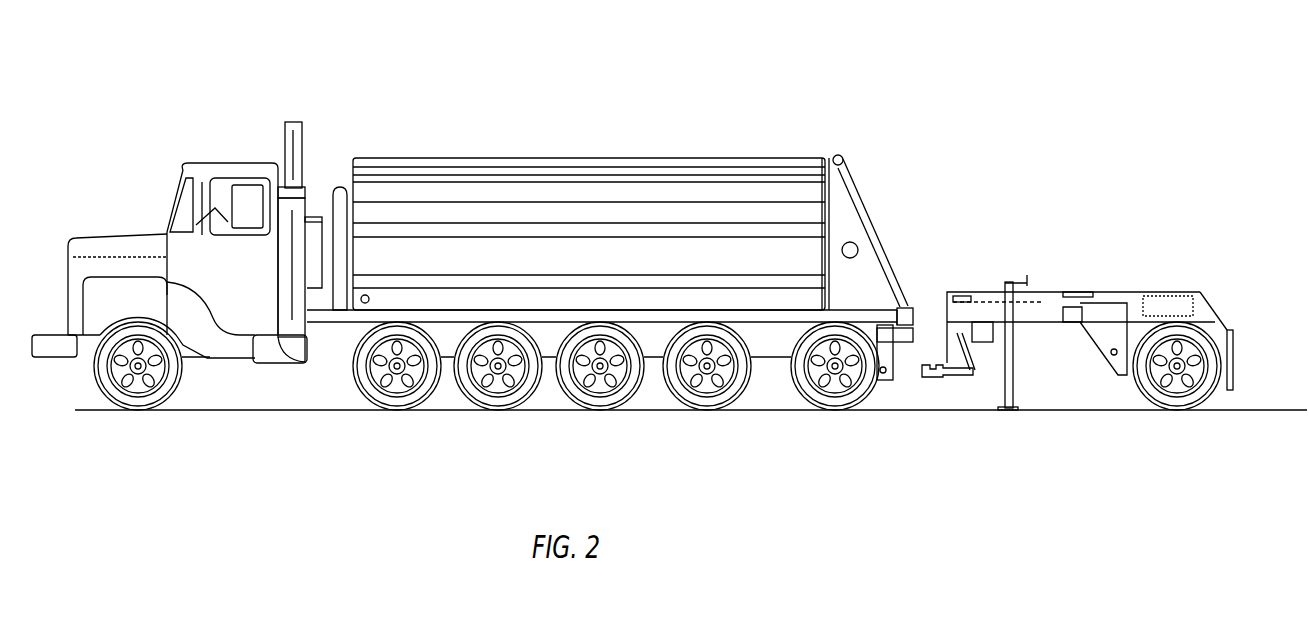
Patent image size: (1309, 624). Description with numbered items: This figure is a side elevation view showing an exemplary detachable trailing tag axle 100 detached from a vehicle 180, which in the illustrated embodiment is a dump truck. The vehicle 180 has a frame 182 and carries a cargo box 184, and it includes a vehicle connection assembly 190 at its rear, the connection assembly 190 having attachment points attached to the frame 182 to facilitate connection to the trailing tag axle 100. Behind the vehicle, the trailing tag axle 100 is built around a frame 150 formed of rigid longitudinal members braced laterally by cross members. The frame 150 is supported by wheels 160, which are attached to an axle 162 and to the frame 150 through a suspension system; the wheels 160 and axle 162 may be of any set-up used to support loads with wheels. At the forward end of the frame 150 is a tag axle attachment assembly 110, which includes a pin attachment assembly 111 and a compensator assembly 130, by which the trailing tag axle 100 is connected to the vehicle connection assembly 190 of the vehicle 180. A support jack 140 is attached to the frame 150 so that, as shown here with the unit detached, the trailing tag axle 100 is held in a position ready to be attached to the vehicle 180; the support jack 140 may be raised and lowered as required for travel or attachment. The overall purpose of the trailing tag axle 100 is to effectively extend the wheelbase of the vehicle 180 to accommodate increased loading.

The detachable trailing tag axle 100 is at (1079, 357).
The tag axle attachment assembly 110 is at (931, 387).
The pin attachment assembly 111 is at (980, 325).
The compensator assembly 130 is at (921, 370).
The support jack 140 is at (1017, 380).
The frame 150 is at (1125, 292).
The wheels 160 is at (1233, 368).
The axle 162 is at (1178, 372).
The vehicle 180 is at (590, 126).
The frame 182 is at (772, 347).
The cargo box 184 is at (710, 227).
The vehicle connection assembly 190 is at (933, 318).